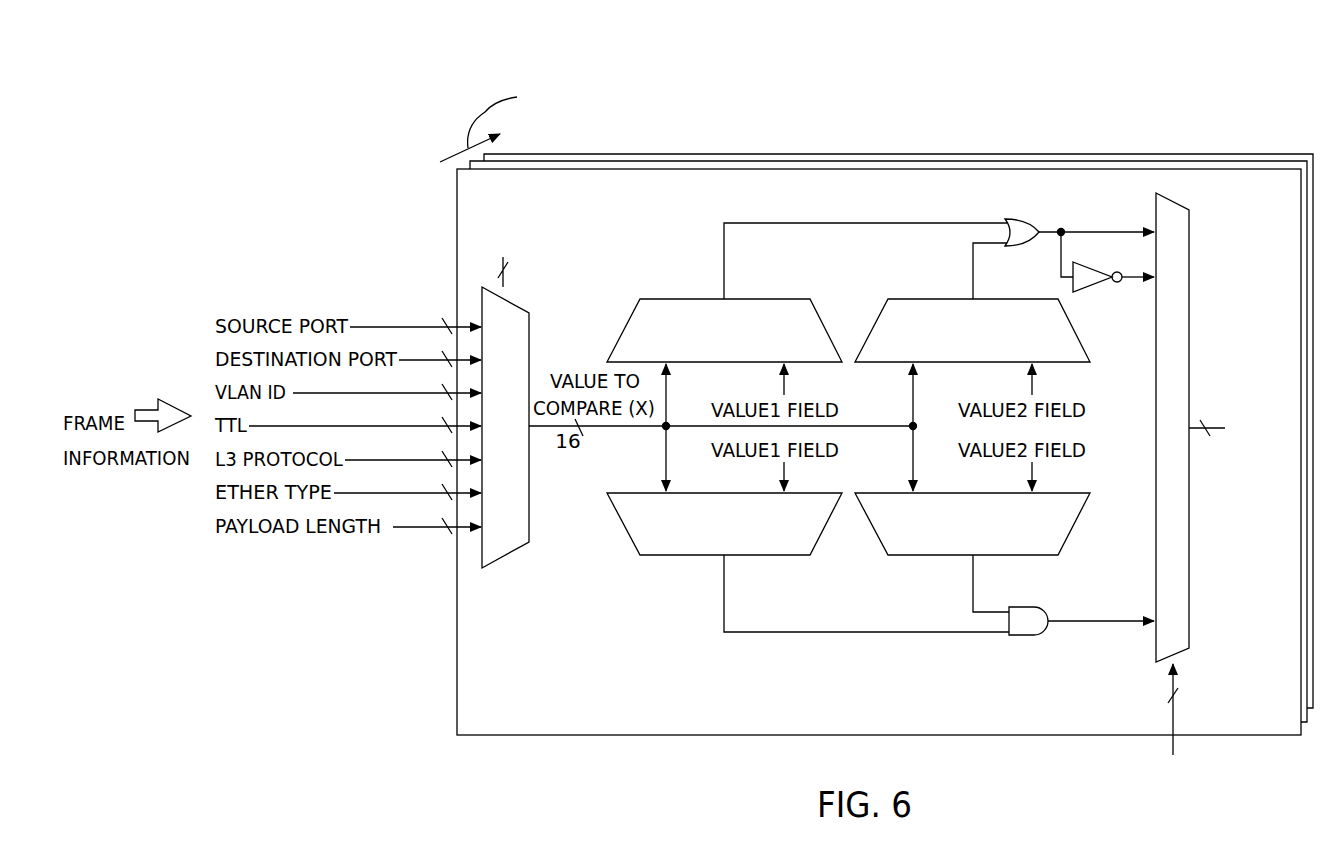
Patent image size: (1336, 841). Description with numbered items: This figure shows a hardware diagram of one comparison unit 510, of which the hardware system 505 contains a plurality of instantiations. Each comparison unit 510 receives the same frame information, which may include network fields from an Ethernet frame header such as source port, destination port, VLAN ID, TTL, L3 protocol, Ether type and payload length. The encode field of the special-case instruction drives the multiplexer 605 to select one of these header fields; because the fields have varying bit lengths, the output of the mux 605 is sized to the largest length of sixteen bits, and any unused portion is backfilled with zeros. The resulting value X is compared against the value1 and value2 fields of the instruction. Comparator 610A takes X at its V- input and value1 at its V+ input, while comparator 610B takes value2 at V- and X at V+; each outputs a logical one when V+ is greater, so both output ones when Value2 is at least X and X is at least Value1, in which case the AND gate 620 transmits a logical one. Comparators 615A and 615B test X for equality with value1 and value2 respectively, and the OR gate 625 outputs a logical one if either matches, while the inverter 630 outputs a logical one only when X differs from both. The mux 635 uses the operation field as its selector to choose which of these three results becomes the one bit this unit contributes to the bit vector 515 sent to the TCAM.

The hardware system 505 is at (403, 99).
The comparison unit 510 is at (1131, 205).
The bit vector 515 is at (1238, 486).
The multiplexer 605 is at (511, 552).
The comparator 610A is at (672, 557).
The comparator 610B is at (921, 557).
The comparator 615A is at (657, 297).
The comparator 615B is at (907, 297).
The AND gate 620 is at (1025, 637).
The OR gate 625 is at (1023, 216).
The inverter 630 is at (1090, 287).
The multiplexer 635 is at (1191, 350).